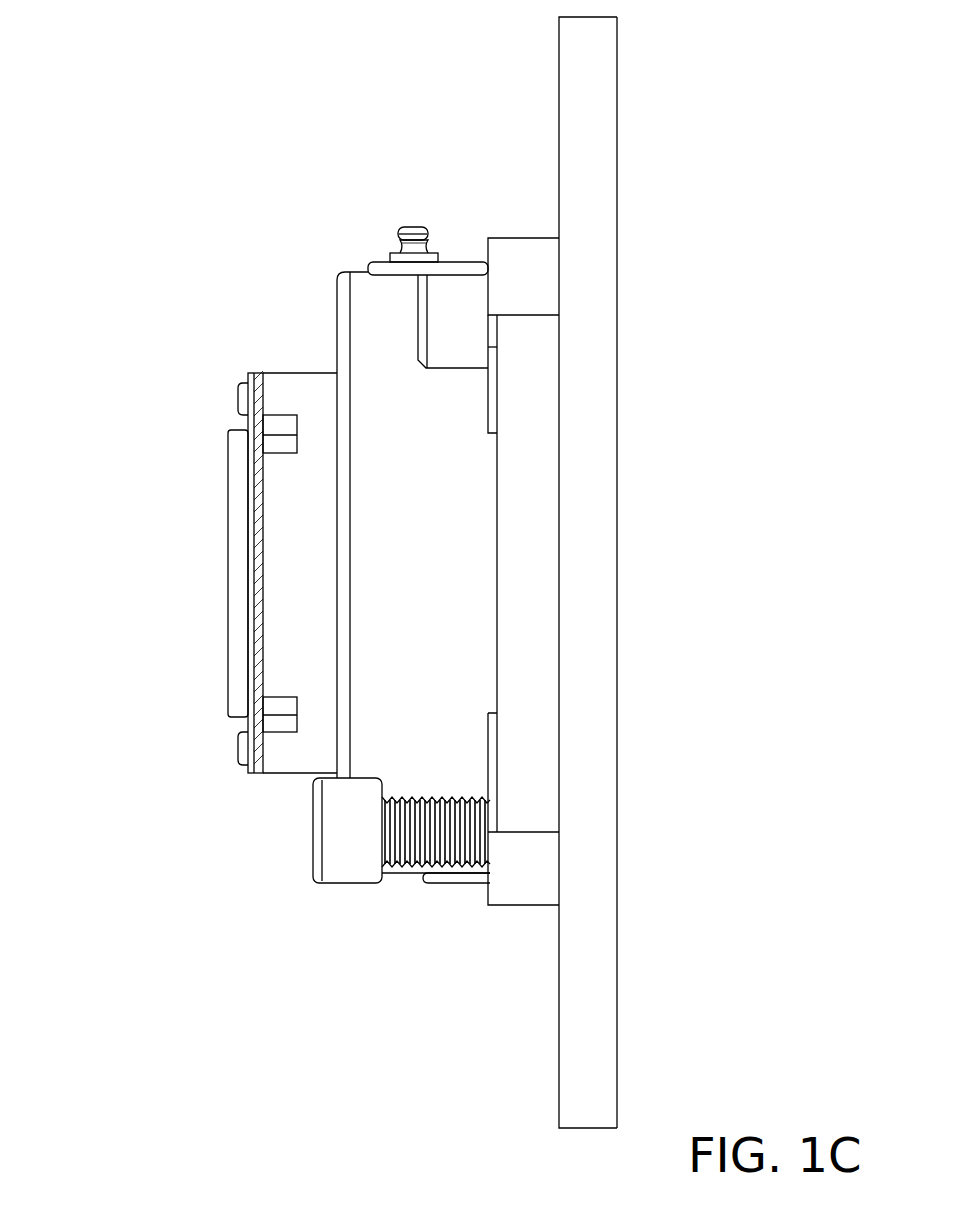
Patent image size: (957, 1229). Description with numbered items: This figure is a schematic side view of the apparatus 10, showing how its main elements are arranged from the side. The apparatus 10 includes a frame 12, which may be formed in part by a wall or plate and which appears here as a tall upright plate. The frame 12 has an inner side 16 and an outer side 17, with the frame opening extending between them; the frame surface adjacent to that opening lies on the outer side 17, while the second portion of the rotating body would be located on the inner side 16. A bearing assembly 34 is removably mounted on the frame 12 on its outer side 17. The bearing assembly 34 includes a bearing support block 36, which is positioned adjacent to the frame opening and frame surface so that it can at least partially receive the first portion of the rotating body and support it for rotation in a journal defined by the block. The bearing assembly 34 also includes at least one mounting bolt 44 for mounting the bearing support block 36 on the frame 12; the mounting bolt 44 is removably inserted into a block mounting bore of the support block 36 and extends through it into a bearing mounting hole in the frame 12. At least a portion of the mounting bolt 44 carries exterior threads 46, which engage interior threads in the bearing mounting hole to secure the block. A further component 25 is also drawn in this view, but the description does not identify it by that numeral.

The apparatus 10 is at (174, 71).
The frame 12 is at (602, 66).
The inner side 16 is at (646, 116).
The outer side 17 is at (523, 95).
The slide plate 25 is at (228, 642).
The bearing assembly 34 is at (227, 320).
The bearing support block 36 is at (371, 296).
The mounting bolt 44 is at (313, 867).
The exterior threads 46 is at (411, 867).